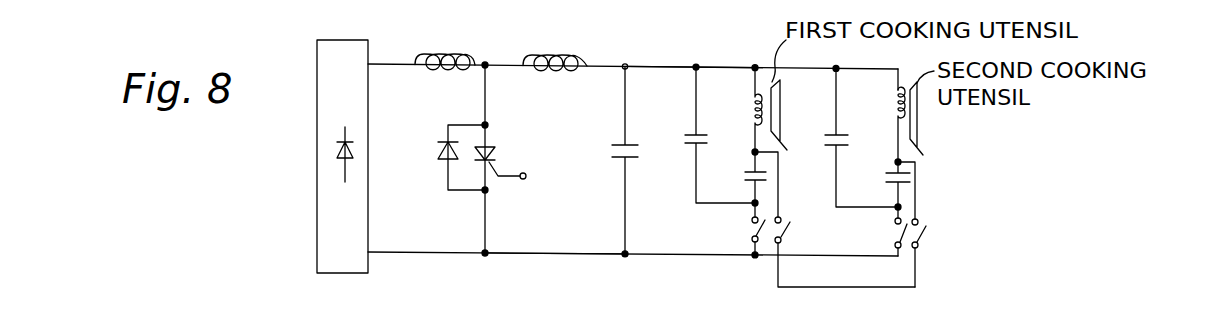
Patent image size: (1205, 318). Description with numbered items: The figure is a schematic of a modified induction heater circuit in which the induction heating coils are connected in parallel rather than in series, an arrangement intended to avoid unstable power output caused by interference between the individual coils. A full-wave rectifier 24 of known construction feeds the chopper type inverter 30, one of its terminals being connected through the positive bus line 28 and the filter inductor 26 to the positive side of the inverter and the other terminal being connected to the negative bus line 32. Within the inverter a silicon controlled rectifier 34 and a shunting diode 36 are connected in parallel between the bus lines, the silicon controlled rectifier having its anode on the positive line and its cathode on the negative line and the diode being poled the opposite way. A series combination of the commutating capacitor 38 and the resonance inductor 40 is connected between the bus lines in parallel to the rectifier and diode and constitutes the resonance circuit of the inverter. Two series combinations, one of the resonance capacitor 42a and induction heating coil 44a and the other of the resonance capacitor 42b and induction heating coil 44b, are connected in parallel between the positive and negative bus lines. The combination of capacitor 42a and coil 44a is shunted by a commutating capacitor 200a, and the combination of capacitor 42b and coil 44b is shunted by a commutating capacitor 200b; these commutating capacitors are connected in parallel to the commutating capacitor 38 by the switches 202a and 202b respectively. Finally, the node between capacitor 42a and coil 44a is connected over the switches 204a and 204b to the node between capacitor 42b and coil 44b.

The full-wave rectifier 24 is at (346, 275).
The filter inductor 26 is at (432, 72).
The positive bus line 28 is at (601, 65).
The chopper type inverter 30 is at (662, 77).
The negative bus line 32 is at (598, 256).
The silicon controlled rectifier 34 is at (497, 148).
The diode 36 is at (447, 162).
The commutating capacitor 38 is at (614, 150).
The resonance inductor 40 is at (556, 72).
The induction heating coil 44a is at (757, 96).
The induction heating coil 44b is at (896, 97).
The resonance capacitor 42a is at (745, 172).
The resonance capacitor 42b is at (890, 171).
The commutating capacitor 200a is at (690, 142).
The commutating capacitor 200b is at (823, 139).
The switch 202a is at (752, 231).
The switch 202b is at (890, 233).
The switch 204a is at (785, 228).
The switch 204b is at (917, 230).